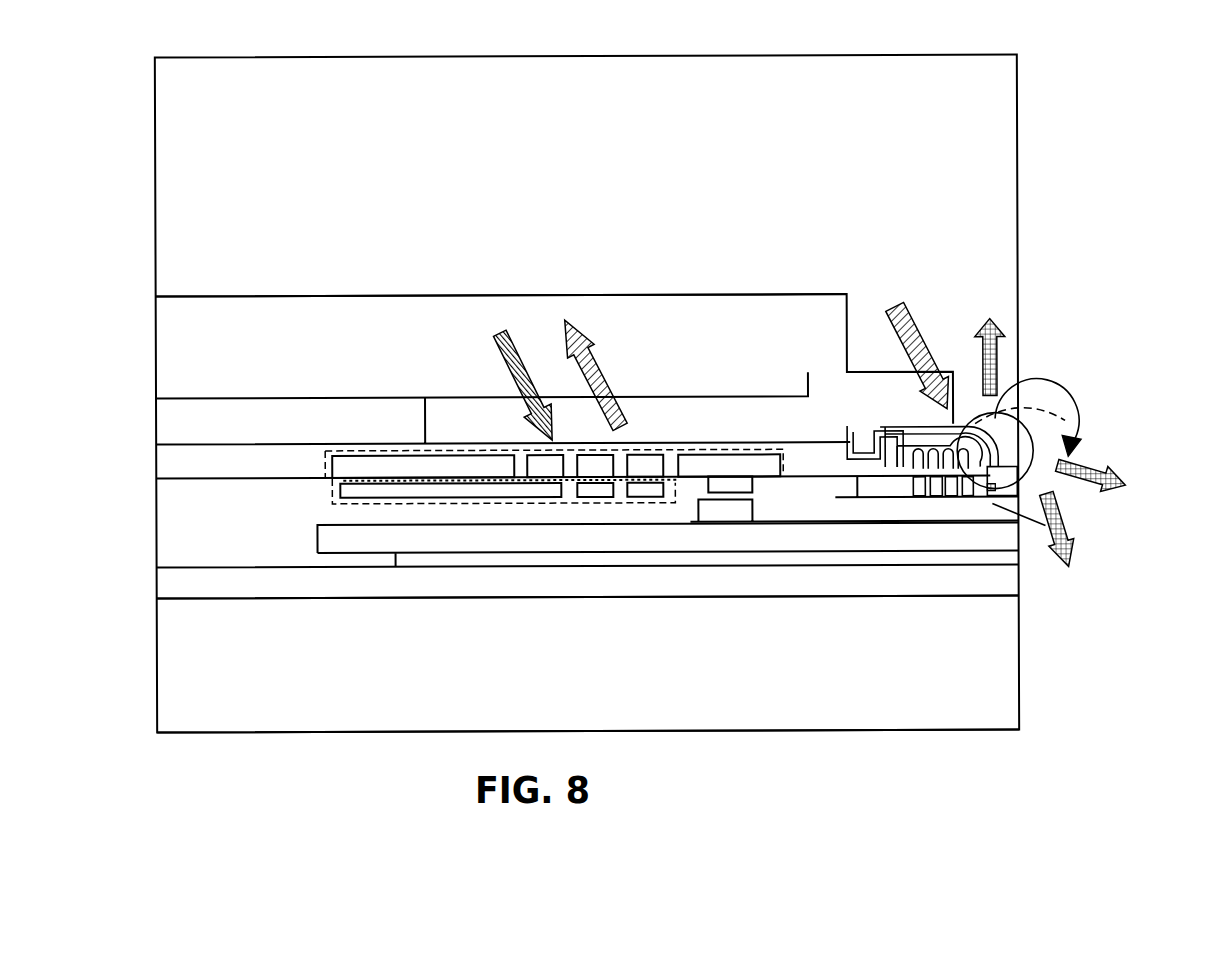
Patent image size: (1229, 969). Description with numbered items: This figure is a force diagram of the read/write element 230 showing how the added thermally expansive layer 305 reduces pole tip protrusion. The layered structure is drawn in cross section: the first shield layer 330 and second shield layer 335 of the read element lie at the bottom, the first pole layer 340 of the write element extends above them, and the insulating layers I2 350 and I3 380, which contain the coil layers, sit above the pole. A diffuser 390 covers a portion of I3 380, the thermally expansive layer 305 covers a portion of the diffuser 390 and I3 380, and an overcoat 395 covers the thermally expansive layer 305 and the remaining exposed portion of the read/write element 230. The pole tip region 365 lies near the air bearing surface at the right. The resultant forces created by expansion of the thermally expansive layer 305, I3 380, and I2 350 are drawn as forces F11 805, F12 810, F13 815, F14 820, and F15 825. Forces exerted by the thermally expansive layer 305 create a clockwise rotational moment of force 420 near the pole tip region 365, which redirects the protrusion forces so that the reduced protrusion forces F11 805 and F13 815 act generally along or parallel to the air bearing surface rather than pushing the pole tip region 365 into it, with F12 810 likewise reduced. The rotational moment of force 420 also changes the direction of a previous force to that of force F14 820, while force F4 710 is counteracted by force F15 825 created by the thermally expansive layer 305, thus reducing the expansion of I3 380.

The read/write element 230 is at (583, 35).
The overcoat 395 is at (655, 110).
The thermally expansive layer 305 is at (385, 369).
The diffuser 390 is at (833, 430).
The insulating layer (I3) 380 is at (848, 470).
The insulating layer (I2) 350 is at (825, 508).
The first pole layer (P1) 340 is at (695, 546).
The second shield layer (shield 2) 335 is at (625, 590).
The first shield layer (shield 1) 330 is at (625, 640).
The force F15 825 is at (504, 364).
The force F4 710 is at (595, 363).
The force F14 820 is at (905, 322).
The force F11 805 is at (993, 321).
The rotational moment of force 420 is at (1058, 375).
The pole tip region 365 is at (1083, 465).
The force F12 810 is at (1117, 493).
The force F13 815 is at (1075, 548).